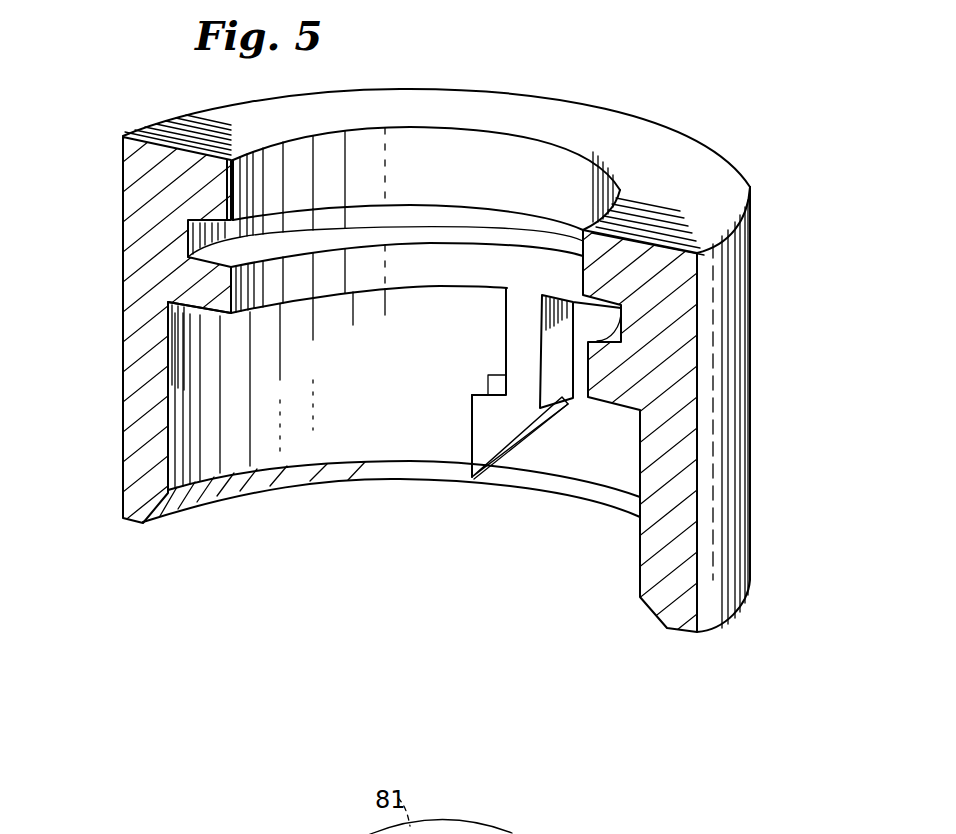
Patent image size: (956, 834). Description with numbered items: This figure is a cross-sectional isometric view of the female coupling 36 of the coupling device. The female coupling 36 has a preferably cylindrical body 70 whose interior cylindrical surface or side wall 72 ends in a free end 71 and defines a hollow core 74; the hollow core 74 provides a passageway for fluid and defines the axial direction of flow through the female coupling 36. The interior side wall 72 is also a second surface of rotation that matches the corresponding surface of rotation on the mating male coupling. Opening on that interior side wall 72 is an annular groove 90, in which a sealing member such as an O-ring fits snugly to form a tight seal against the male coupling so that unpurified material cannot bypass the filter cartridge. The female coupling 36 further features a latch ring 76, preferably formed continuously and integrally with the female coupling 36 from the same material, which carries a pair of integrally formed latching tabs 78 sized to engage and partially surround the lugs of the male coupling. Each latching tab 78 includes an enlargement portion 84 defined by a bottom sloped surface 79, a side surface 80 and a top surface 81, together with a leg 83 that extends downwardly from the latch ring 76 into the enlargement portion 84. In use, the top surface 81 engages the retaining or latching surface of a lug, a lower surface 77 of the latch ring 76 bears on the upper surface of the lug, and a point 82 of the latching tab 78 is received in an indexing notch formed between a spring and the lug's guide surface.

The female coupling 36 is at (770, 157).
The cylindrical body 70 is at (752, 338).
The free end 71 is at (267, 497).
The interior cylindrical surface or side wall 72 is at (322, 431).
The hollow core 74 is at (524, 170).
The latch ring 76 is at (200, 283).
The lower surface 77 is at (207, 323).
The latching tab 78 is at (441, 464).
The bottom sloped surface 79 is at (530, 437).
The side surface 80 is at (467, 424).
The top surface 81 is at (490, 375).
The point 82 is at (472, 478).
The leg 83 is at (557, 385).
The enlargement portion 84 is at (513, 420).
The annular groove 90 is at (187, 248).